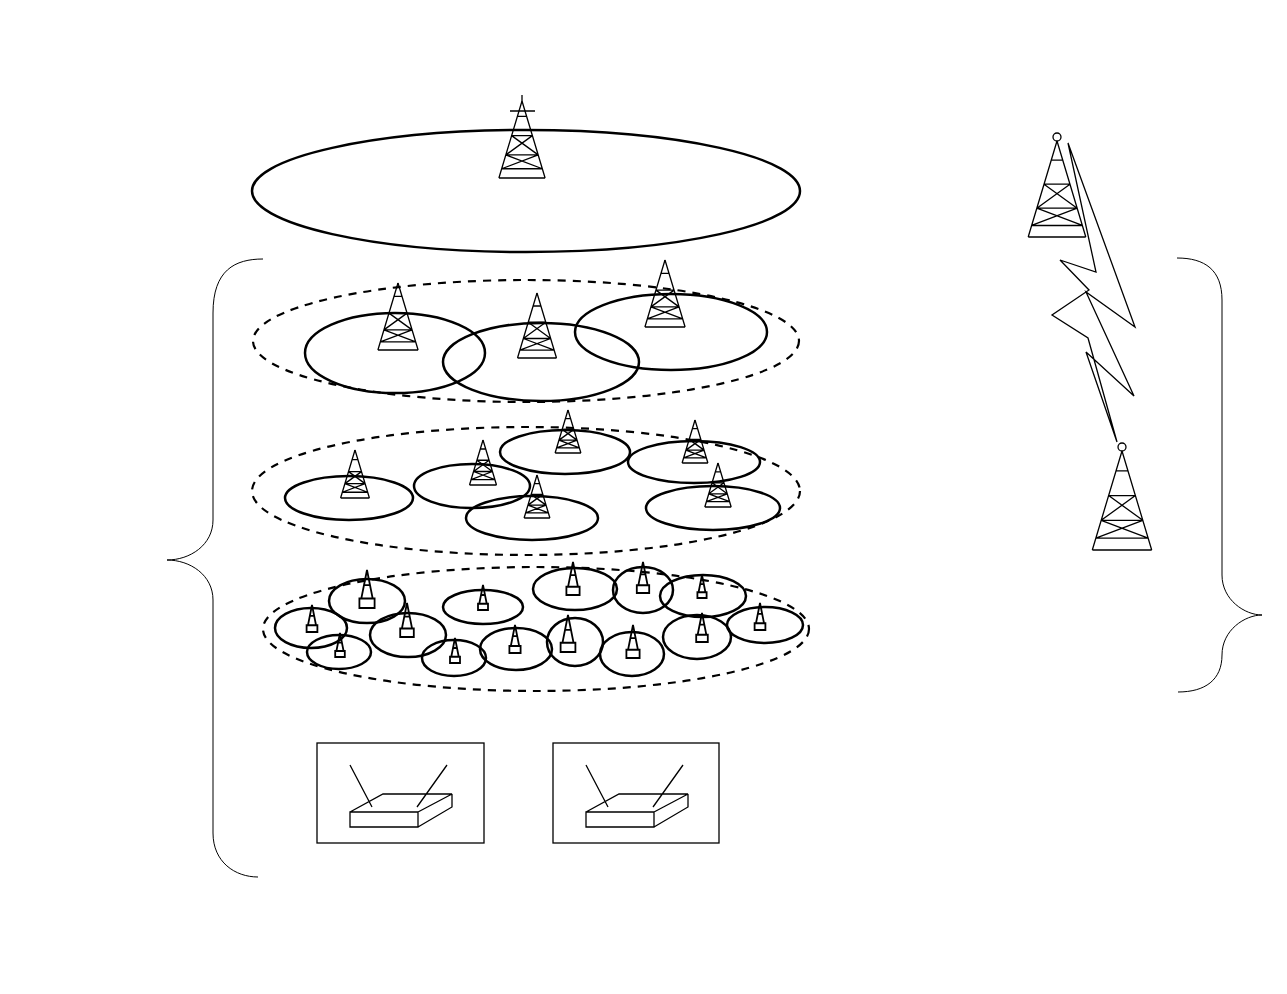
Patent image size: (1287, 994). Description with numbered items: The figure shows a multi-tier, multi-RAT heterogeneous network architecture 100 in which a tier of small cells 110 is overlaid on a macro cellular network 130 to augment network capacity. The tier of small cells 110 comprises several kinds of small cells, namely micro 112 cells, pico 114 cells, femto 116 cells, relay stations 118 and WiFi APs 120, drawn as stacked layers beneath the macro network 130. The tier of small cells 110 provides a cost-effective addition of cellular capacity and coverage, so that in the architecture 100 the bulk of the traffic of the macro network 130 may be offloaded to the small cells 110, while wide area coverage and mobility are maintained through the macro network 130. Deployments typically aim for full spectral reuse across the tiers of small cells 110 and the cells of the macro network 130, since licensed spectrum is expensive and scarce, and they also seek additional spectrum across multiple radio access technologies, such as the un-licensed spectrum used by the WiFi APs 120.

The multi-tier, multi-RAT heterogeneous network architecture 100 is at (178, 102).
The tier of small cells 110 is at (213, 385).
The micro 112 is at (927, 343).
The pico 114 is at (910, 478).
The femto 116 is at (943, 657).
The relay stations 118 is at (1108, 192).
The WiFi APs 120 is at (917, 818).
The macro cellular network 130 is at (918, 193).